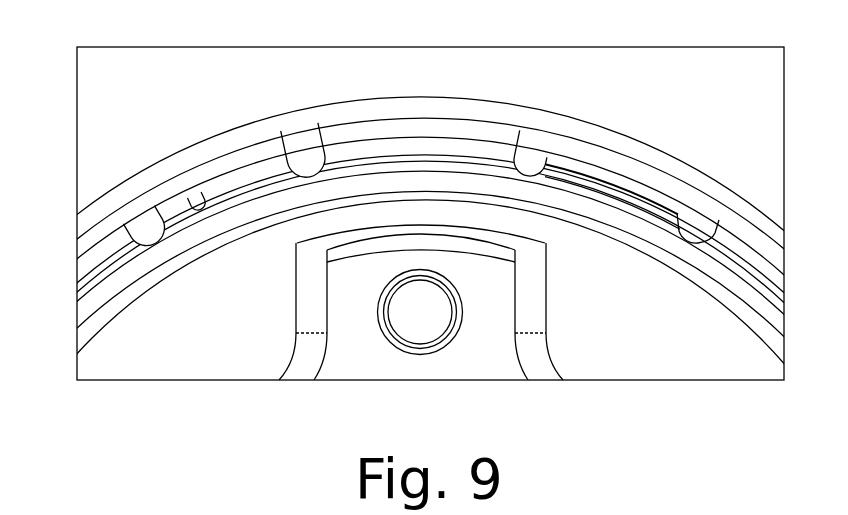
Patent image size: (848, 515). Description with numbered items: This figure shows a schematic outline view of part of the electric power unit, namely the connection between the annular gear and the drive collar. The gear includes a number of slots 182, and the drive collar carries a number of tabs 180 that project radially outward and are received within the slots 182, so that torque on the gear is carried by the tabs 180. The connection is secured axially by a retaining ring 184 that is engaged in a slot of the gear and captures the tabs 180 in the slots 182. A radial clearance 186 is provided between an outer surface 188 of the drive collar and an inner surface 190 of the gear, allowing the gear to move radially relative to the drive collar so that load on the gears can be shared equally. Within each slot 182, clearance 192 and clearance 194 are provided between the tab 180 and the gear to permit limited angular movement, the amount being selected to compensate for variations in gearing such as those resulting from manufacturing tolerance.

The tabs 180 is at (396, 123).
The slots 182 is at (322, 148).
The retaining ring 184 is at (617, 136).
The radial clearance 186 is at (617, 185).
The outer surface 188 is at (238, 188).
The inner surface 190 is at (196, 196).
The clearance 192 is at (125, 232).
The clearance 194 is at (324, 152).